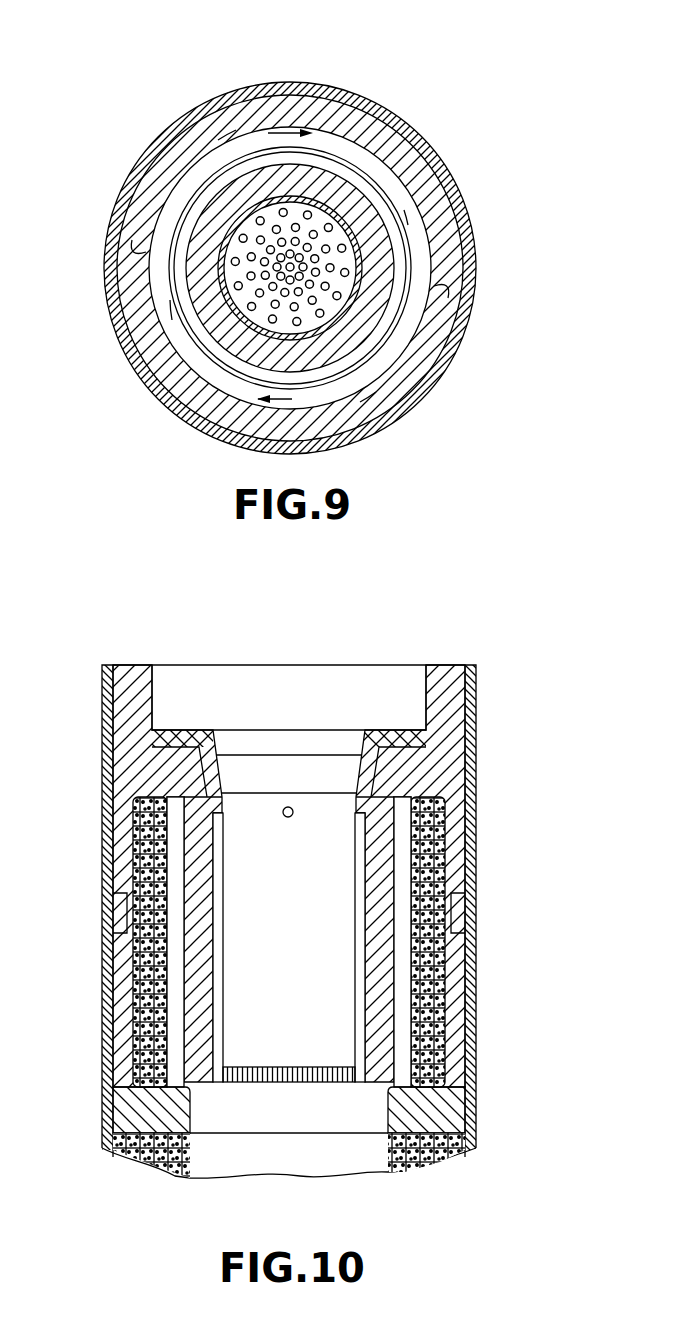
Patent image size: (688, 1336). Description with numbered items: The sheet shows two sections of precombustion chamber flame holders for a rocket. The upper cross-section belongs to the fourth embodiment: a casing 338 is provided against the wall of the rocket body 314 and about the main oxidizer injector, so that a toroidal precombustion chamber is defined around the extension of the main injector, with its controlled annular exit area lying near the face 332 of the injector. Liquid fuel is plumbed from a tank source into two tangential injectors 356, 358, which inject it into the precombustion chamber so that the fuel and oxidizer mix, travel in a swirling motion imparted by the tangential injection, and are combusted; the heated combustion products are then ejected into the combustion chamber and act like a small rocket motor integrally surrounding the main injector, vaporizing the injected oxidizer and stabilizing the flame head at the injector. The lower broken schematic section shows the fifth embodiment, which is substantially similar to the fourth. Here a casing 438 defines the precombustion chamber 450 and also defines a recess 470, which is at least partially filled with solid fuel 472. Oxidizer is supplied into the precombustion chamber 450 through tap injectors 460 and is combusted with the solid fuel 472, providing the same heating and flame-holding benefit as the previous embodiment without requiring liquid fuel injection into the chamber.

In FIG. 9, the rocket body 314 is at (147, 150).
In FIG. 9, the casing 338 is at (272, 177).
In FIG. 9, the tangential injector 356 is at (140, 247).
In FIG. 9, the tangential injector 358 is at (440, 293).
In FIG. 9, the face of the injector 332 is at (337, 207).
In FIG. 10, the tap injectors 460 is at (355, 812).
In FIG. 10, the recess 470 is at (445, 813).
In FIG. 10, the solid fuel 472 is at (430, 867).
In FIG. 10, the precombustion chamber 450 is at (405, 980).
In FIG. 10, the casing 438 is at (447, 1093).